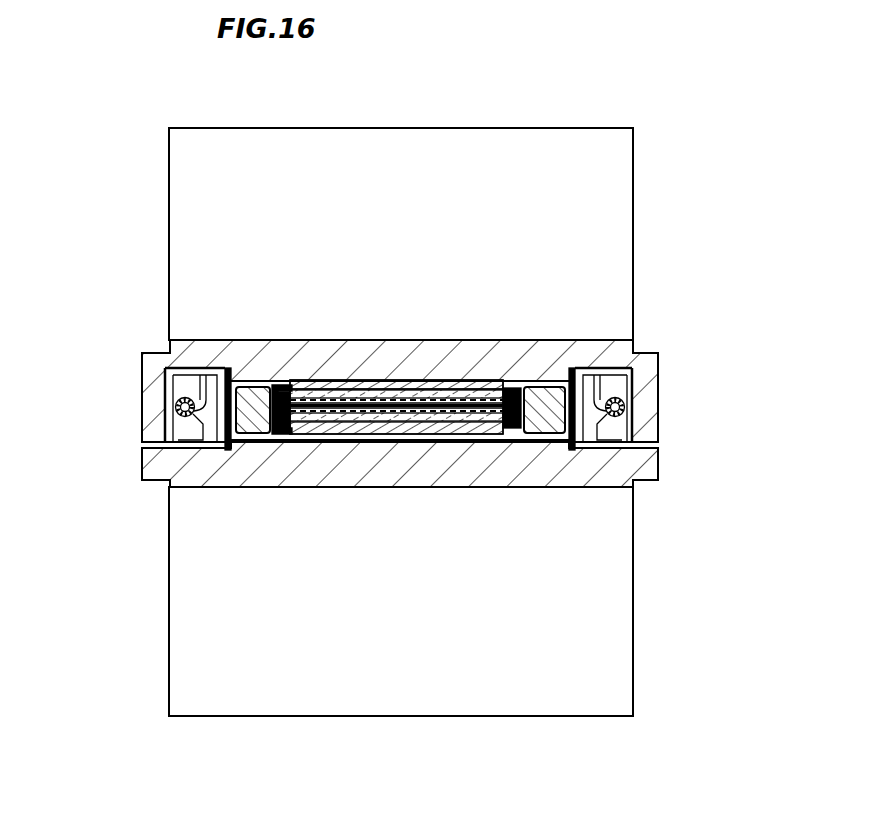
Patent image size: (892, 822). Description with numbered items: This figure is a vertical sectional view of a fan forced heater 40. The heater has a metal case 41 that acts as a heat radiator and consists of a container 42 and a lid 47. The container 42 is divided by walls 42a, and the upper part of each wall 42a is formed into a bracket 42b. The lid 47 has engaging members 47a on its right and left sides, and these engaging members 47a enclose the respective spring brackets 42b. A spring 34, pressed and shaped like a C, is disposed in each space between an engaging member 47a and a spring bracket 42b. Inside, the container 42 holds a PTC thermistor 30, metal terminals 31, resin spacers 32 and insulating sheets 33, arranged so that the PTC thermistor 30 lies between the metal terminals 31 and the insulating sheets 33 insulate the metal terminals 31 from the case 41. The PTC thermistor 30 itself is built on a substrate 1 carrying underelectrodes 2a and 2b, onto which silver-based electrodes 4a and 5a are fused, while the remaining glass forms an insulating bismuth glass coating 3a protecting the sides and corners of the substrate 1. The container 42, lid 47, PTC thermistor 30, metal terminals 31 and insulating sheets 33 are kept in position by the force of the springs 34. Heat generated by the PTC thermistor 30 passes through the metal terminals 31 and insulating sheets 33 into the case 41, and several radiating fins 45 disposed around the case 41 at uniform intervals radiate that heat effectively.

The fan forced heater 40 is at (418, 83).
The radiating fins 45 is at (478, 137).
The metal case 41 is at (662, 435).
The container 42 is at (643, 463).
The lid 47 is at (436, 350).
The engaging members 47a is at (147, 385).
The walls 42a is at (214, 445).
The bracket 42b is at (226, 376).
The spring 34 is at (170, 407).
The resin spacers 32 is at (254, 436).
The electrode 5a is at (290, 435).
The bismuth glass coating 3a is at (514, 392).
The PTC thermistor 30 is at (482, 440).
The insulating sheets 33 is at (287, 383).
The electrode 4a is at (337, 388).
The metal terminals 31 is at (362, 396).
The underelectrode 2a is at (398, 400).
The underelectrode 2b is at (372, 412).
The substrate 1 is at (458, 405).